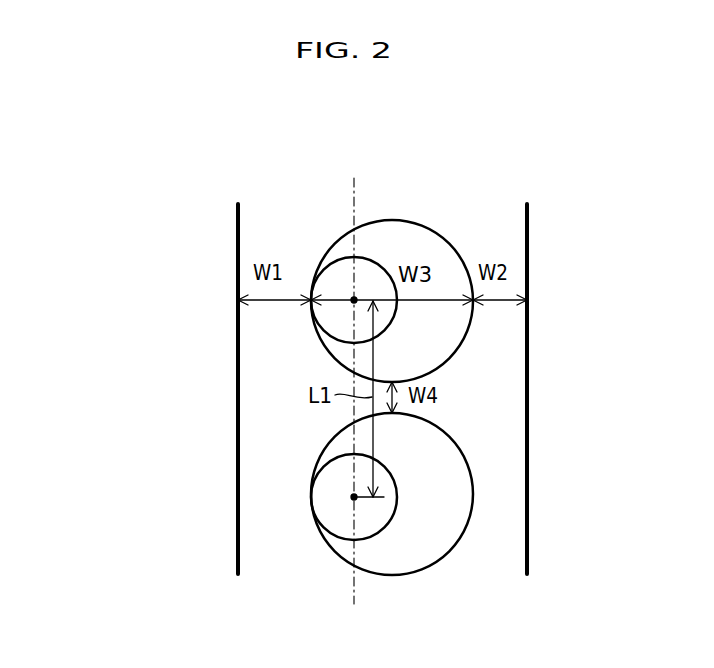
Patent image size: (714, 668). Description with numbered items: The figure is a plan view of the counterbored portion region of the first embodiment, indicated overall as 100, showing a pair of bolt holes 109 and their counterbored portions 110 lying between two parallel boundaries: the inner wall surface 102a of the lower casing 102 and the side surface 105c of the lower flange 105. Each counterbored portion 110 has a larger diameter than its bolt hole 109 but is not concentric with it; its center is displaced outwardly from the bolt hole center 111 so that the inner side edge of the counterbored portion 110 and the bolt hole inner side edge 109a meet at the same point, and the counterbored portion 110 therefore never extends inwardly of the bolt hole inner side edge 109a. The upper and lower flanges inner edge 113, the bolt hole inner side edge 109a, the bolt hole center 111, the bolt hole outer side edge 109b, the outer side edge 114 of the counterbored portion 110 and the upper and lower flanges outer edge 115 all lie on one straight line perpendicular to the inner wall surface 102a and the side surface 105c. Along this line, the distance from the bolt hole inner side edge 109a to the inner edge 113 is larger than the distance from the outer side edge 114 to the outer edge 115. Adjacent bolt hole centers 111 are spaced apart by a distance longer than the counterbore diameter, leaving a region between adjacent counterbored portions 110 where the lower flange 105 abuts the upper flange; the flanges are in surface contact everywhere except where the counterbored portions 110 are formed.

The liquid ejection head assembly 100 is at (122, 202).
The lower casing 102 is at (252, 513).
The inner wall surface of the lower casing 102a is at (237, 437).
The lower flange 105 is at (505, 380).
The side surface of the lower flange 105c is at (527, 430).
The bolt hole 109 is at (330, 280).
The bolt hole inner side edge 109a is at (311, 301).
The bolt hole outer side edge 109b is at (401, 305).
The counterbored portion 110 is at (433, 240).
The bolt hole center 111 is at (355, 300).
The upper and lower flanges inner edge 113 is at (237, 299).
The outer side edge of the counterbored portion 114 is at (476, 306).
The upper and lower flanges outer edge 115 is at (527, 298).